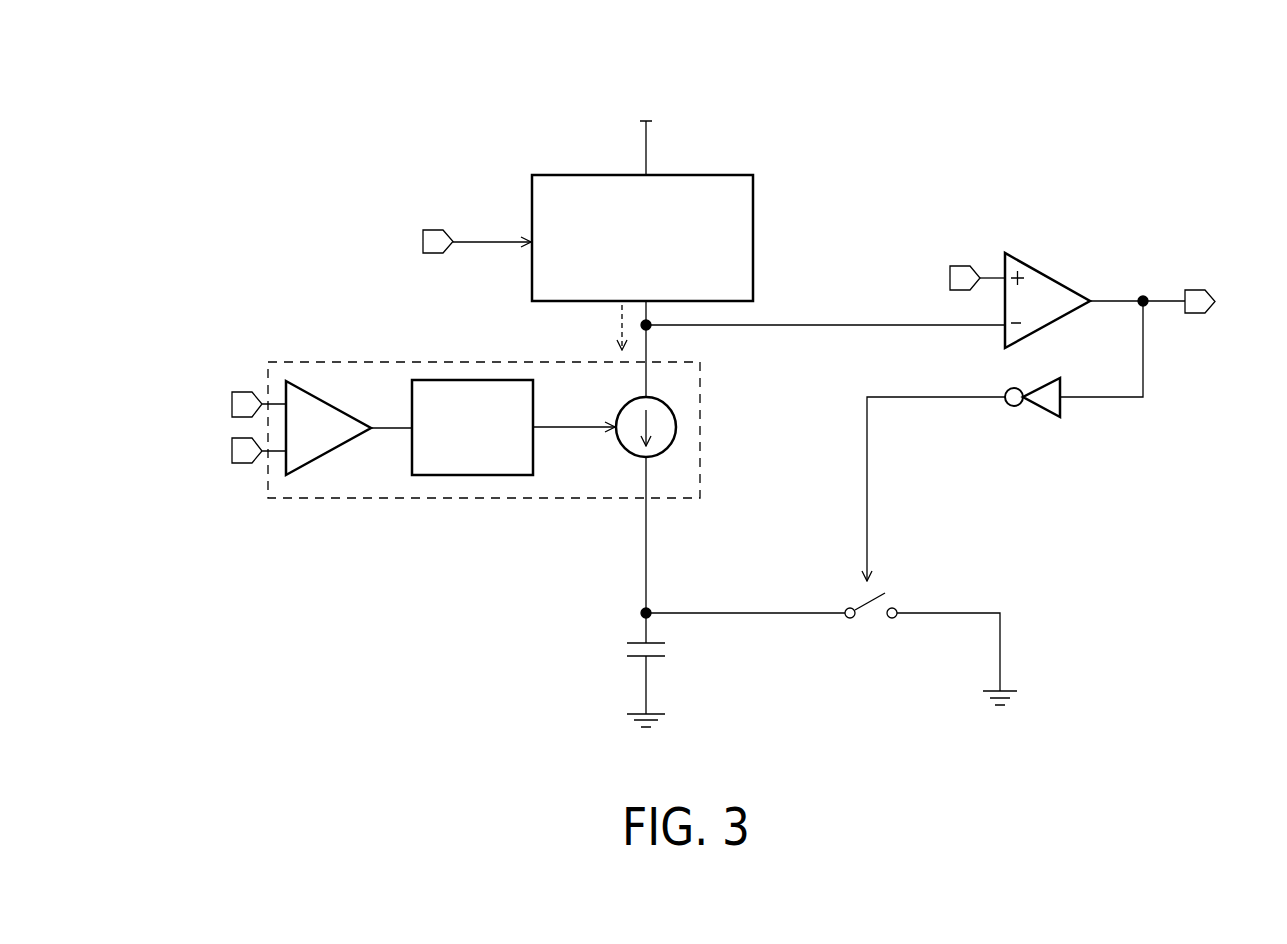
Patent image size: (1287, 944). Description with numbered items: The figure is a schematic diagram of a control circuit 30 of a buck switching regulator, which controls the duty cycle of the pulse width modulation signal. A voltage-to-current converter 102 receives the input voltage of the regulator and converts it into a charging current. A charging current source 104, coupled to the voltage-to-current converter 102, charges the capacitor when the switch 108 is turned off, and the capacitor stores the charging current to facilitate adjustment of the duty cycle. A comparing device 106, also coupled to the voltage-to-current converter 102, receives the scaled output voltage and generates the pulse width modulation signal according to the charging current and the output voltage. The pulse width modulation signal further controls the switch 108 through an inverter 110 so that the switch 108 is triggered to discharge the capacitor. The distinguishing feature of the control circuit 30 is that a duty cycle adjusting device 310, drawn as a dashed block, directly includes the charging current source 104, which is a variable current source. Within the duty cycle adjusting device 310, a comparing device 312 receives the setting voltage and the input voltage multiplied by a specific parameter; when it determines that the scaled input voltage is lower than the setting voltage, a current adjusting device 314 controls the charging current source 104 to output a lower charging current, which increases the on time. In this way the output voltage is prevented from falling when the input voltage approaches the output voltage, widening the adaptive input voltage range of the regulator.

The control circuit 30 is at (1188, 129).
The voltage-to-current converter 102 is at (724, 175).
The charging current source 104 is at (676, 427).
The comparing device 106 is at (1045, 269).
The switch 108 is at (865, 622).
The inverter 110 is at (1045, 418).
The duty cycle adjusting device 310 is at (395, 500).
The comparing device 312 is at (322, 381).
The current adjusting device 314 is at (490, 477).